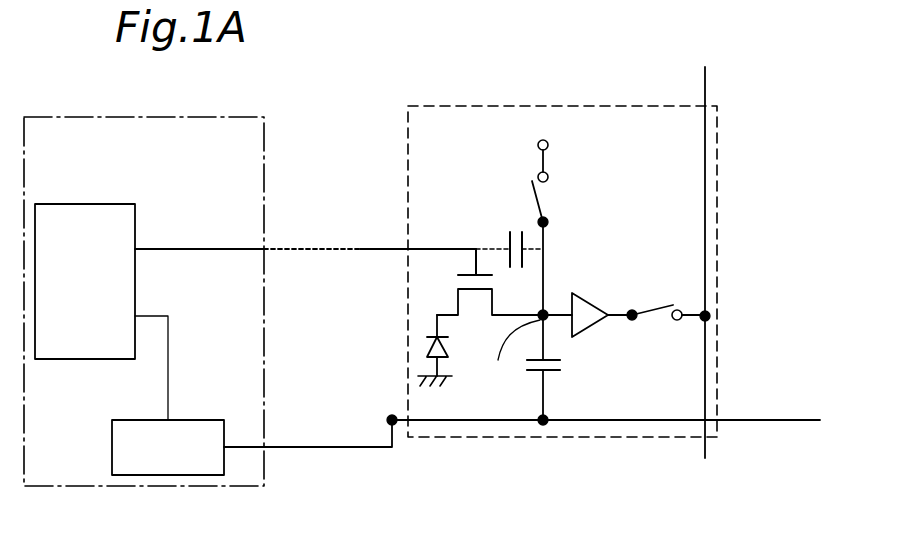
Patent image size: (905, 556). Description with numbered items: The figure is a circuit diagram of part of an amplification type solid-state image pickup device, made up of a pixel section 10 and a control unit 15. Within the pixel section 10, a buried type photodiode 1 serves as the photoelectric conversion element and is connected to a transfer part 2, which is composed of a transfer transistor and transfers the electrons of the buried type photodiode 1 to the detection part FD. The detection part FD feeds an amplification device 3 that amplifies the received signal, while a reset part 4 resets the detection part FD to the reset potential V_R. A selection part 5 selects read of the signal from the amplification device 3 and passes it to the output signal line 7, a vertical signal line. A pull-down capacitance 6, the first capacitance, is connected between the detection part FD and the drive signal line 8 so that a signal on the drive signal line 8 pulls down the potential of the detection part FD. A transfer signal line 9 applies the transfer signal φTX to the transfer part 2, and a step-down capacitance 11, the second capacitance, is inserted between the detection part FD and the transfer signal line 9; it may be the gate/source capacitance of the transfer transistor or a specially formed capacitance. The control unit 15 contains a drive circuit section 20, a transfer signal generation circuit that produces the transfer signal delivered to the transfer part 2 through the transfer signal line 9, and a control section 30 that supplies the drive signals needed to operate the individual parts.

The buried type photodiode 1 is at (427, 345).
The transfer part 2 is at (476, 303).
The amplification device 3 is at (590, 293).
The reset part 4 is at (547, 197).
The selection part 5 is at (658, 318).
The pull-down capacitance 6 is at (560, 369).
The output signal line 7 is at (705, 80).
The drive signal line 8 is at (765, 420).
The transfer signal line 9 is at (367, 249).
The pixel section 10 is at (456, 106).
The step-down capacitance 11 is at (508, 240).
The control unit 15 is at (231, 117).
The drive circuit section 20 is at (96, 204).
The control section 30 is at (202, 420).